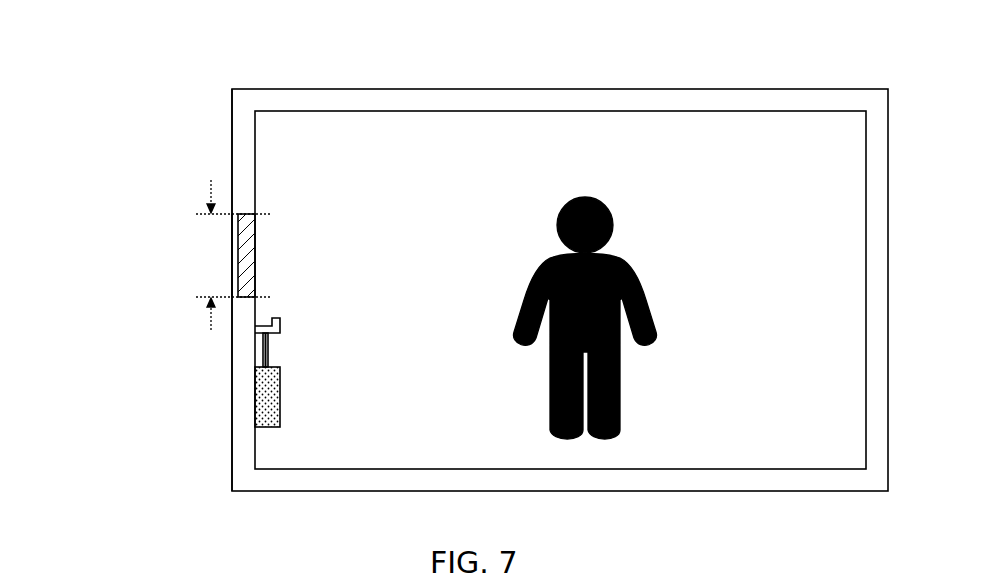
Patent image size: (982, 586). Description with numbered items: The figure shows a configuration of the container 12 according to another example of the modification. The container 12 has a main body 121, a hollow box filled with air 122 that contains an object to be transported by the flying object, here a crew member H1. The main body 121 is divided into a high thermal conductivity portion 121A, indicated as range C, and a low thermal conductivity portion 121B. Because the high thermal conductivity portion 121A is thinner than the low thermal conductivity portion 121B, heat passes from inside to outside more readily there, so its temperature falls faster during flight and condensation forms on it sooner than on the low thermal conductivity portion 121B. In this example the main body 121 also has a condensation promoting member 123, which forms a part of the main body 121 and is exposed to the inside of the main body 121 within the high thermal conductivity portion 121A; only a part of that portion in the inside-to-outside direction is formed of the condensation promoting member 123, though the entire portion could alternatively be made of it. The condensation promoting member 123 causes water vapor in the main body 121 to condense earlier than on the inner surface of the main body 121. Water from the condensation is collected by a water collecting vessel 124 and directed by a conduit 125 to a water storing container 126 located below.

The container 12 is at (688, 69).
The main body 121 is at (118, 137).
The high thermal conductivity portion 121A is at (232, 232).
The low thermal conductivity portion 121B is at (232, 129).
The air 122 is at (819, 196).
The condensation promoting member 123 is at (248, 248).
The water collecting vessel 124 is at (280, 320).
The conduit 125 is at (268, 354).
The water storing container 126 is at (280, 397).
The range C is at (233, 255).
The crew member H1 is at (587, 198).